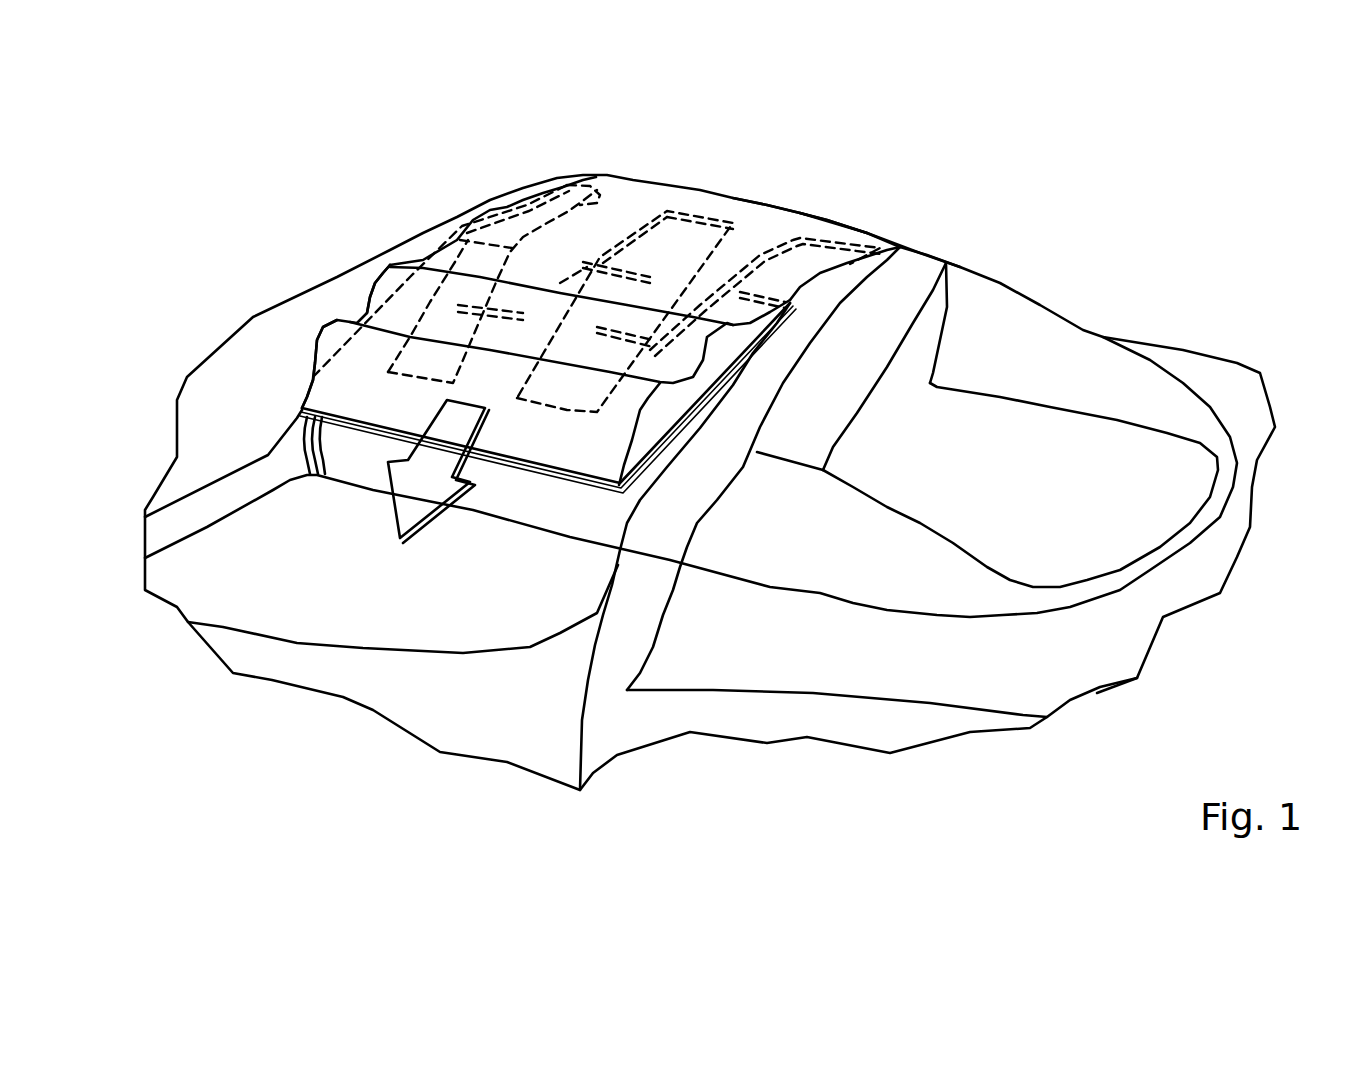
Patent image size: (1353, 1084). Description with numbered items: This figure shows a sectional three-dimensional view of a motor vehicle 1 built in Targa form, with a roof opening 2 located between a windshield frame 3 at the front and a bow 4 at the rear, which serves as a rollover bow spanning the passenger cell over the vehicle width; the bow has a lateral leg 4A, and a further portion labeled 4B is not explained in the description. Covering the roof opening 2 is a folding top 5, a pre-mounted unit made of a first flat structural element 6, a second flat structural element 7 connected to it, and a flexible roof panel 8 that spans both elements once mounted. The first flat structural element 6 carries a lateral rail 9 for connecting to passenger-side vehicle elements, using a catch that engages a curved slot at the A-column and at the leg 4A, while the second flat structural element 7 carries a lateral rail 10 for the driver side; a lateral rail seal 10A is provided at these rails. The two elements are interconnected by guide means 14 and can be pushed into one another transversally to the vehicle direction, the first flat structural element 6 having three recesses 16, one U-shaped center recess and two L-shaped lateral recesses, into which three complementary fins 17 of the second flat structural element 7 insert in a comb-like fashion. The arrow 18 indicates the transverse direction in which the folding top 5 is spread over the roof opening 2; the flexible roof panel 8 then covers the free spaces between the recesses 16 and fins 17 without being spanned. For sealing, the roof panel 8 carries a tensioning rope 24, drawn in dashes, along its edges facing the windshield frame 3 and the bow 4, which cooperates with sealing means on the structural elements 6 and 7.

The motor vehicle 1 is at (224, 358).
The roof opening 2 is at (572, 505).
The windshield frame 3 is at (290, 432).
The rollover bow 4 is at (888, 292).
The lateral leg of the rollover bow 4A is at (921, 254).
The front side of foam body 4B is at (633, 598).
The folding top 5 is at (374, 284).
The first flat structural element 6 is at (619, 205).
The second flat structural element 7 is at (348, 342).
The flexible roof panel 8 is at (390, 265).
The lateral rail 9 is at (827, 220).
The lateral rail 10 is at (302, 408).
The lateral rail seal 10A is at (513, 460).
The guide means 14 is at (647, 223).
The recesses 16 is at (680, 240).
The fins 17 is at (593, 283).
The arrow 18 is at (438, 443).
The tensioning rope 24 is at (502, 209).